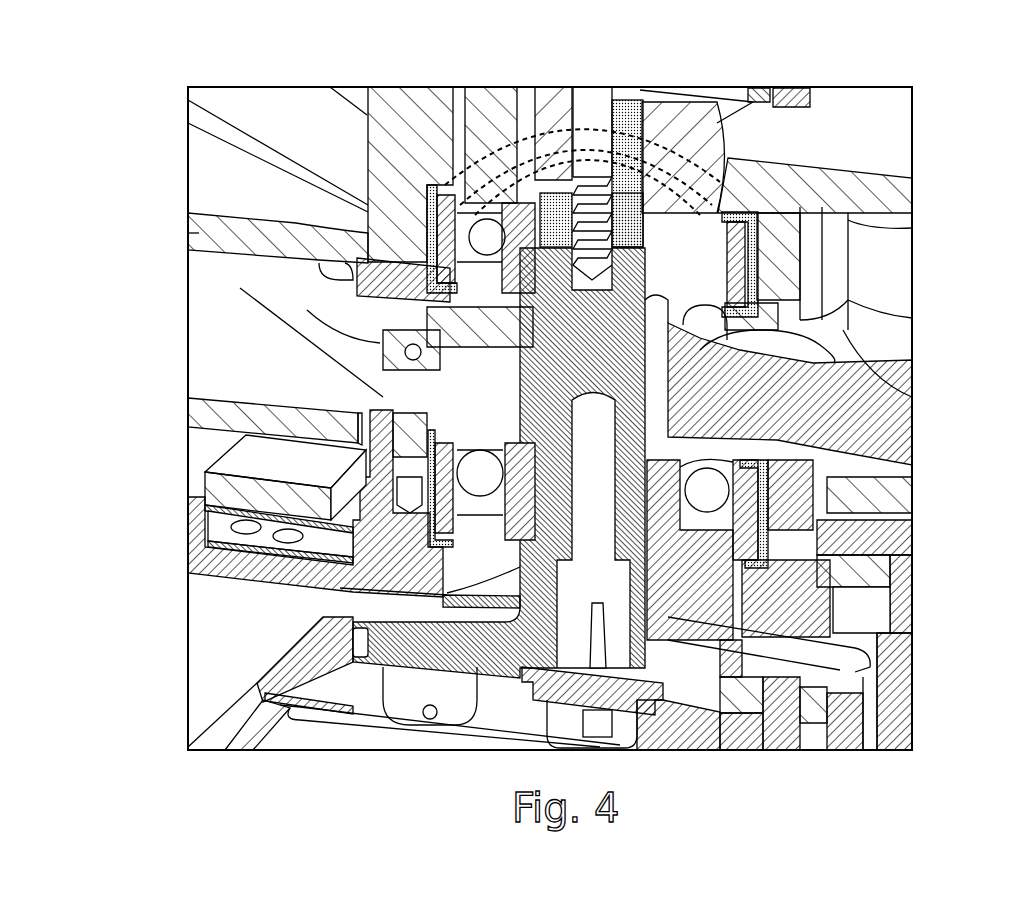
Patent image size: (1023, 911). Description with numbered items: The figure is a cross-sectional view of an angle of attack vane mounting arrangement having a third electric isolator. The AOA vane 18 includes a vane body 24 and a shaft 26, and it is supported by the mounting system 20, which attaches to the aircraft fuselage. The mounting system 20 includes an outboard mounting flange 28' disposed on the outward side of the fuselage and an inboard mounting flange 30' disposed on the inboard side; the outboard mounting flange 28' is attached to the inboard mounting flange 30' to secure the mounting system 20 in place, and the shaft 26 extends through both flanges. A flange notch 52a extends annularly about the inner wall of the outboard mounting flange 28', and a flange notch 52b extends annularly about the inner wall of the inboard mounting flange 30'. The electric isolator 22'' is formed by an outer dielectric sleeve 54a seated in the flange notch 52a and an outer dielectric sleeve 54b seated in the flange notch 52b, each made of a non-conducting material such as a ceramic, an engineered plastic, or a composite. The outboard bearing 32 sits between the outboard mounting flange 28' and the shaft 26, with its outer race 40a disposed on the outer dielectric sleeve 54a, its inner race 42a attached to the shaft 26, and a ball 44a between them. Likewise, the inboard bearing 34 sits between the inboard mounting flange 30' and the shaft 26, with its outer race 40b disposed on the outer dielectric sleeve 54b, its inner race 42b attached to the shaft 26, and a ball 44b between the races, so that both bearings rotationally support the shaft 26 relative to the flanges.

The AOA vane 18 is at (270, 648).
The mounting system 20 is at (178, 372).
The electric isolator 22'' is at (844, 332).
The vane body 24 is at (290, 677).
The shaft 26 is at (667, 562).
The outboard mounting flange 28' is at (262, 503).
The inboard mounting flange 30' is at (312, 242).
The outboard bearing 32 is at (482, 525).
The inboard bearing 34 is at (481, 297).
The outer race 40a is at (387, 412).
The outer race 40b is at (366, 212).
The inner race 42a is at (520, 500).
The inner race 42b is at (522, 253).
The ball 44a is at (440, 463).
The ball 44b is at (433, 190).
The flange notch 52a is at (425, 547).
The flange notch 52b is at (425, 247).
The outer dielectric sleeve 54a is at (770, 520).
The outer dielectric sleeve 54b is at (762, 256).